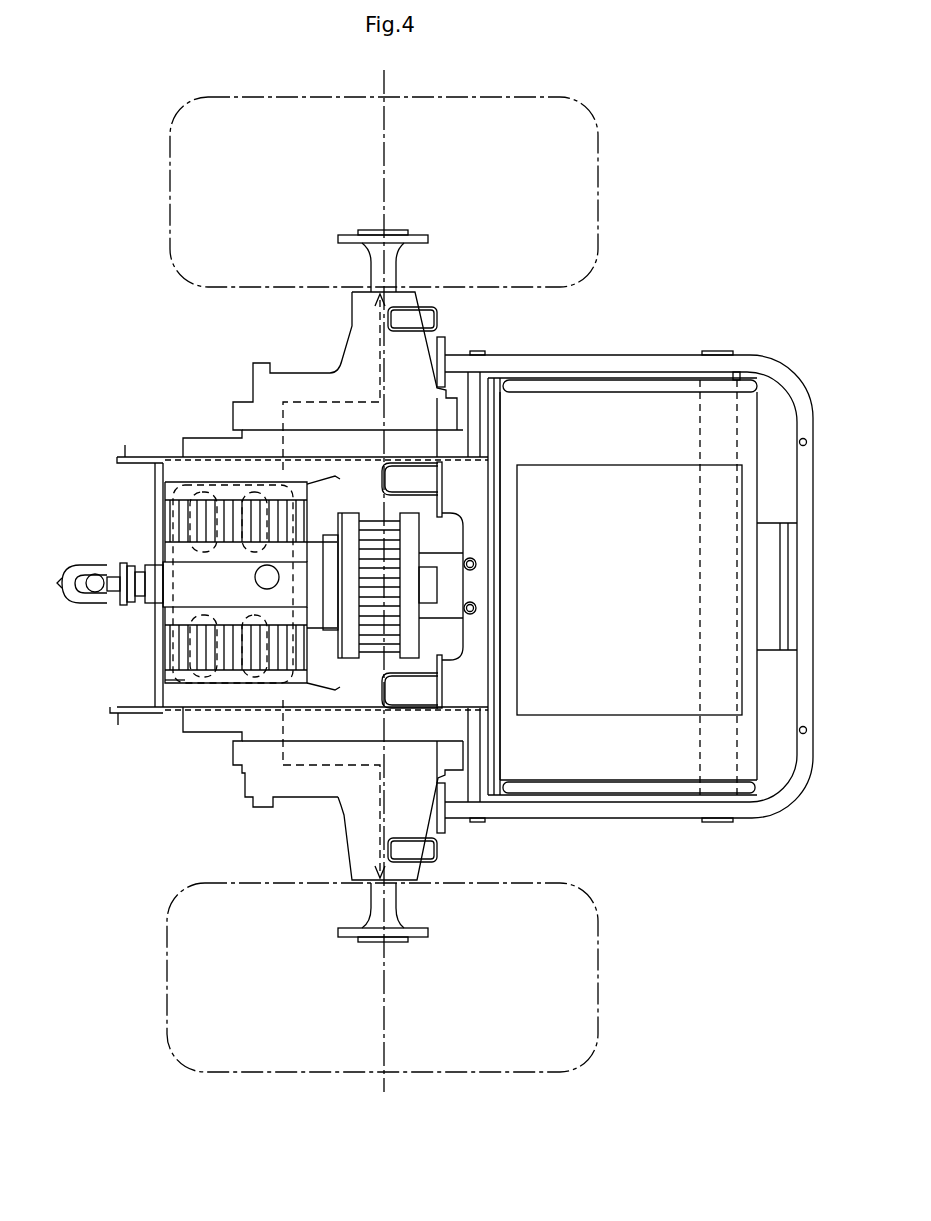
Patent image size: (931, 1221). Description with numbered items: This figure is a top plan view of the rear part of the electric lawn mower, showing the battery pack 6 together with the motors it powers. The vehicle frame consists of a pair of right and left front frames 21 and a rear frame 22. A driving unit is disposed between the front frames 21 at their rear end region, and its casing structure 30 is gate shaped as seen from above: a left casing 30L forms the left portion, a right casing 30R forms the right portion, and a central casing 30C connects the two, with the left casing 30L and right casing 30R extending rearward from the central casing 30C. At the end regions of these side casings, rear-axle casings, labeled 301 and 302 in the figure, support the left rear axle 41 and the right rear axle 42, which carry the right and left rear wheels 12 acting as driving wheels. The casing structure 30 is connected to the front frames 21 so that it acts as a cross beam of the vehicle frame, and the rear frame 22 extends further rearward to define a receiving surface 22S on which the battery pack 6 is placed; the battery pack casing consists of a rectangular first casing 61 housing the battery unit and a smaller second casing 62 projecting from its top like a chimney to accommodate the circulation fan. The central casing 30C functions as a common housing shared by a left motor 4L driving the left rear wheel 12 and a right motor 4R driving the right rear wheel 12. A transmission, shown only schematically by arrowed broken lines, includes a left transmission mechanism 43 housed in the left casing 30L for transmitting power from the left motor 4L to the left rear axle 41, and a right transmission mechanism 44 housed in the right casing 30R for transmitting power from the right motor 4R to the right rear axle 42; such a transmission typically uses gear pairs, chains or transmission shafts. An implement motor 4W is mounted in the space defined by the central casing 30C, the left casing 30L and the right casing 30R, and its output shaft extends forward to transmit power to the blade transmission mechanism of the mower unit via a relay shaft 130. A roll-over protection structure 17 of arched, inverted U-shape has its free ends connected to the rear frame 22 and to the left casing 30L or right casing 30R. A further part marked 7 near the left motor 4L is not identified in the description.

The rear wheels 12 is at (170, 182).
The right rear axle 42 is at (355, 250).
The left rear axle 41 is at (370, 906).
The axle housing 302 is at (350, 332).
The axle housing 301 is at (350, 854).
The right casing 30R is at (252, 386).
The left casing 30L is at (242, 780).
The casing structure 30 is at (200, 735).
The right transmission mechanism 44 is at (306, 392).
The left transmission mechanism 43 is at (312, 765).
The roll-over protection structure 17 is at (428, 308).
The rear frame 22 is at (148, 455).
The front frames 21 is at (135, 716).
The battery pack 6 is at (667, 374).
The receiving surface 22S is at (718, 400).
The second casing 62 is at (617, 470).
The first casing 61 is at (648, 770).
The implement motor 4W is at (410, 545).
The right motor 4R is at (165, 520).
The left motor 4L is at (165, 654).
The bolt 7 is at (165, 682).
The central casing 30C is at (165, 580).
The relay shaft 130 is at (66, 600).